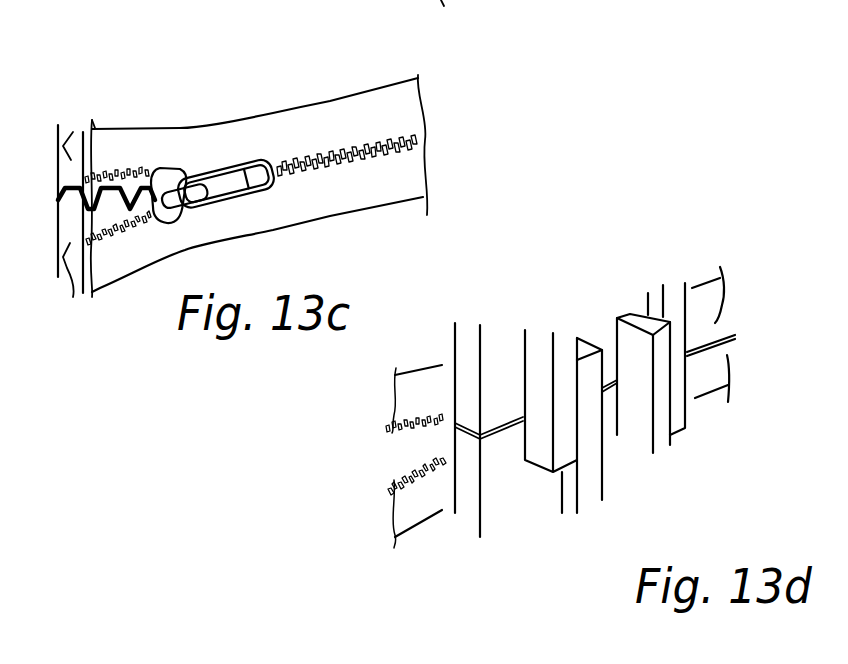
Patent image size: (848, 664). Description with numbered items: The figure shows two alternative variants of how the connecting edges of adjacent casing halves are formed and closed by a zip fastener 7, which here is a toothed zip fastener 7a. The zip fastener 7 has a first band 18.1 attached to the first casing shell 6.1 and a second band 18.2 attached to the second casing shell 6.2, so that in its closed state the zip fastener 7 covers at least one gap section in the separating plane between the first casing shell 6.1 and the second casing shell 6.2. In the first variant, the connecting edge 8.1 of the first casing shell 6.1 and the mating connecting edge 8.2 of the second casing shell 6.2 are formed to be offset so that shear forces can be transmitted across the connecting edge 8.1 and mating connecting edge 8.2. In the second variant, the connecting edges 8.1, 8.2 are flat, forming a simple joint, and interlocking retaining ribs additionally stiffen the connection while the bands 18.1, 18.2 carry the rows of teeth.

In FIG. 13C, the first casing shell 6.1 is at (73, 165).
In FIG. 13D, the first casing shell 6.1 is at (472, 378).
In FIG. 13C, the second casing shell 6.2 is at (58, 277).
In FIG. 13D, the second casing shell 6.2 is at (463, 513).
In FIG. 13C, the zip fastener 7 is at (333, 118).
In FIG. 13C, the toothed zip fastener 7a is at (264, 122).
In FIG. 13C, the connecting edge 8.1 is at (125, 162).
In FIG. 13D, the connecting edge 8.1 is at (523, 390).
In FIG. 13C, the mating connecting edge 8.2 is at (302, 194).
In FIG. 13D, the mating connecting edge 8.2 is at (586, 470).
In FIG. 13C, the first band 18.1 is at (412, 113).
In FIG. 13D, the first band 18.1 is at (398, 404).
In FIG. 13C, the second band 18.2 is at (410, 160).
In FIG. 13D, the second band 18.2 is at (398, 516).